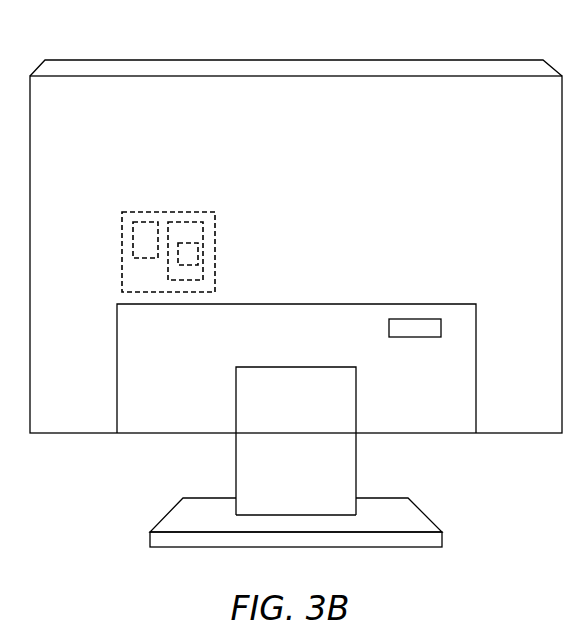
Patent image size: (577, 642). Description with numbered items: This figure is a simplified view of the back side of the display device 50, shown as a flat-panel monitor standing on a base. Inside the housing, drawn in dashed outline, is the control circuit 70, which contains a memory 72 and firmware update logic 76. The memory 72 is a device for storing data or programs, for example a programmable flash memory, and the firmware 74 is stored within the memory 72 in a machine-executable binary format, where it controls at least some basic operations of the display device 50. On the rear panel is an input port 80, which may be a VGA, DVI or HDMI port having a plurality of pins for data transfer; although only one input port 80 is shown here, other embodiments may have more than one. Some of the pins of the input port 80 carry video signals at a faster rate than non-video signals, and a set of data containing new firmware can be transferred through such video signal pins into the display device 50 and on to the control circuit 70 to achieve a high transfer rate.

The display device 50 is at (515, 433).
The control circuit 70 is at (213, 212).
The memory 72 is at (180, 223).
The firmware 74 is at (183, 267).
The firmware update logic 76 is at (145, 222).
The input port 80 is at (420, 337).